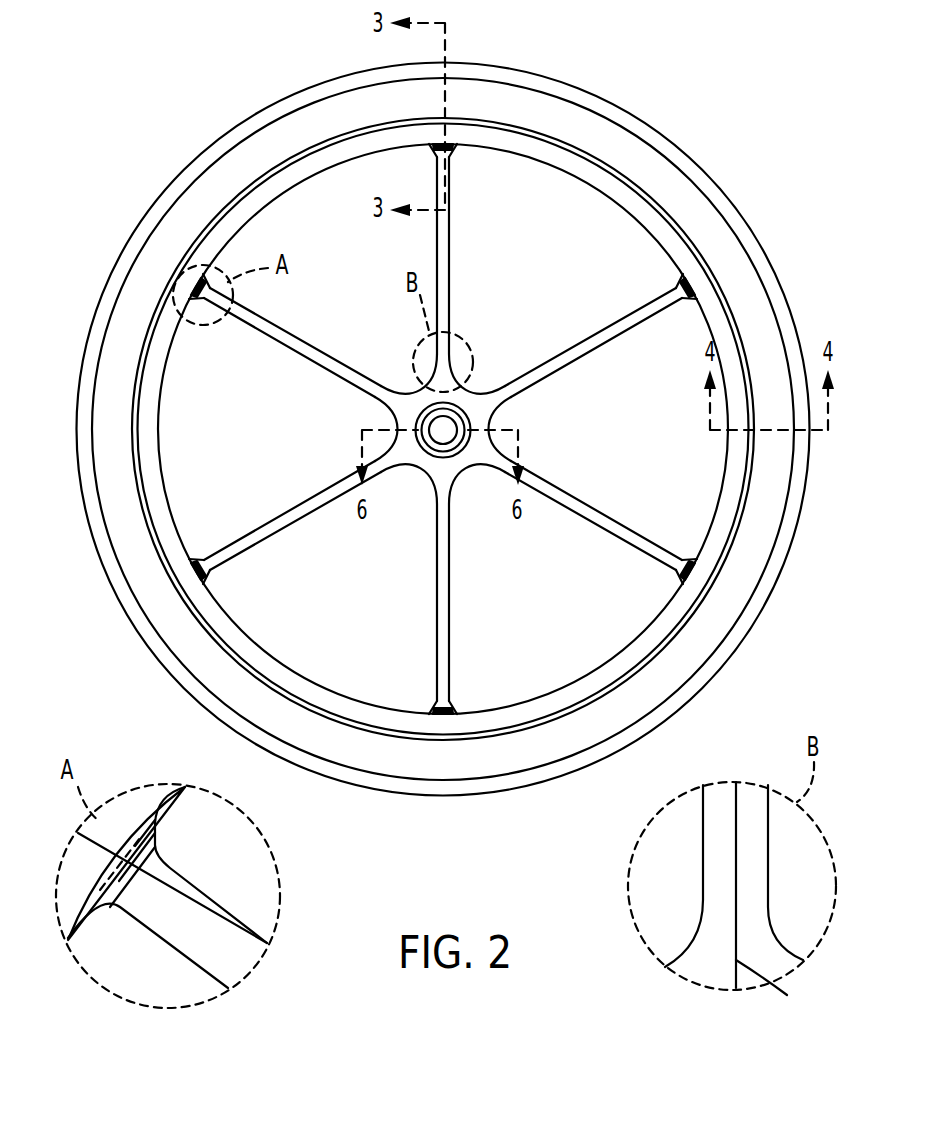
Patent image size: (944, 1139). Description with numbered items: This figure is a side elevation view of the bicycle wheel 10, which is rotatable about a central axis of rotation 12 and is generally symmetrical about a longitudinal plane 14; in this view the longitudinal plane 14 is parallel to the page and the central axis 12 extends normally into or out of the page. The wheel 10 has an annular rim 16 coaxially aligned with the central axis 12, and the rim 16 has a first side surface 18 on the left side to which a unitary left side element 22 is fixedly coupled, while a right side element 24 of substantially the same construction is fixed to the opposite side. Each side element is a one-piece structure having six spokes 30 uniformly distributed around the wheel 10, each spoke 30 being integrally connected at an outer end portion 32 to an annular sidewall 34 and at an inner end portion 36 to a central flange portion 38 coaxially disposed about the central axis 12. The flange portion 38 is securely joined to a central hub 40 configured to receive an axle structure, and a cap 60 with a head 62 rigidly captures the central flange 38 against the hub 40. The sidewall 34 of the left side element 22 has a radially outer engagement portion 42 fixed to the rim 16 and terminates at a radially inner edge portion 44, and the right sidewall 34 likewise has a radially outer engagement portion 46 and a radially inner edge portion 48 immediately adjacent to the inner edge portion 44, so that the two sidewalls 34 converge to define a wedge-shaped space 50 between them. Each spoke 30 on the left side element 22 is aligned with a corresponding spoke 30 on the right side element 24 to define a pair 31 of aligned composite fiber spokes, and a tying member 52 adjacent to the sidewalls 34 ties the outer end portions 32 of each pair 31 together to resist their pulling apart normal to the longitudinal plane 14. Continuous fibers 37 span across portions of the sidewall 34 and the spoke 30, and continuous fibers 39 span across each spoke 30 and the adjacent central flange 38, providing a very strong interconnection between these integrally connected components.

The bicycle wheel 10 is at (790, 150).
The central axis of rotation 12 is at (435, 431).
The longitudinal plane 14 is at (120, 86).
The annular rim 16 is at (170, 185).
The first side surface 18 is at (158, 212).
The left side element 22 is at (137, 265).
The right side element 24 is at (125, 303).
The spoke 30 is at (285, 340).
The pair of aligned spokes 31 is at (452, 180).
The outer end portion 32 is at (462, 144).
The annular sidewall 34 is at (463, 97).
The inner end portion 36 is at (450, 352).
The continuous fibers 37 is at (253, 960).
The central flange portion 38 is at (430, 387).
The continuous fibers 39 is at (773, 986).
The central hub 40 is at (407, 392).
The radially outer engagement portion 42 is at (93, 345).
The radially inner edge portion 44 is at (148, 390).
The radially outer engagement portion 46 is at (733, 225).
The radially inner edge portion 48 is at (703, 283).
The wedge-shaped space 50 is at (750, 305).
The tying member 52 is at (420, 147).
The cap 60 is at (413, 427).
The head 62 is at (435, 452).